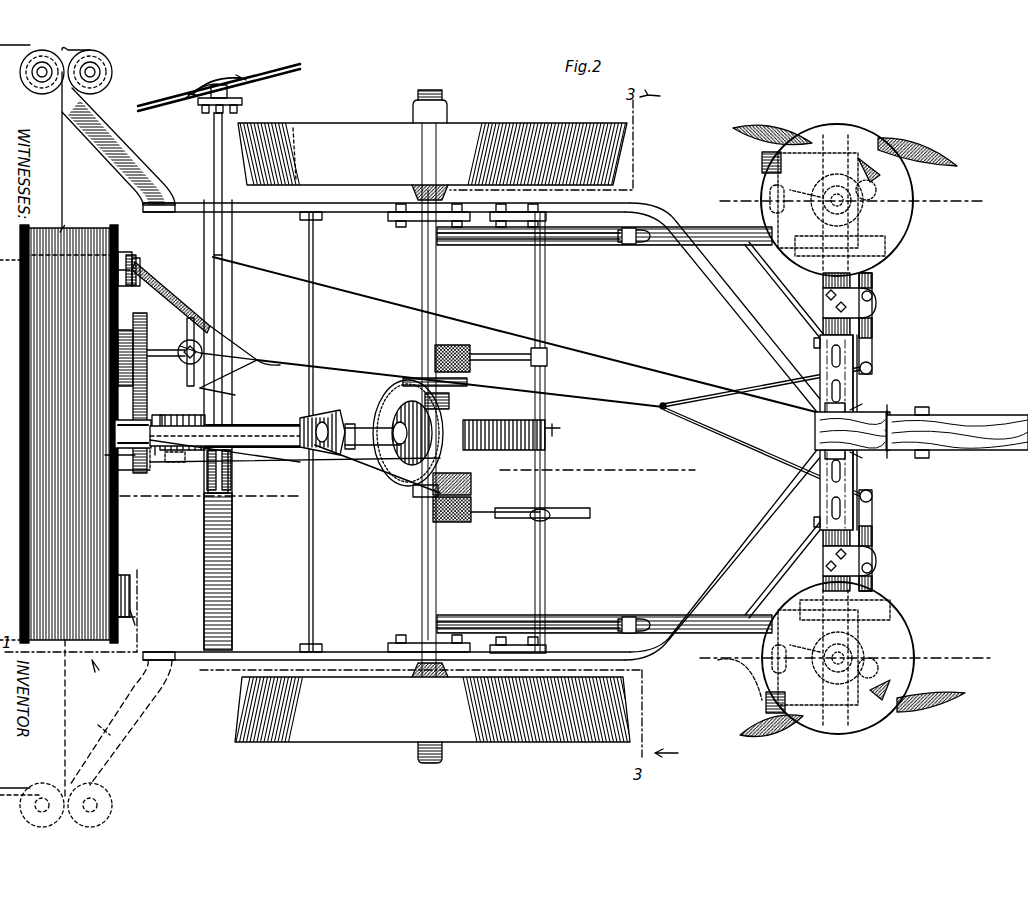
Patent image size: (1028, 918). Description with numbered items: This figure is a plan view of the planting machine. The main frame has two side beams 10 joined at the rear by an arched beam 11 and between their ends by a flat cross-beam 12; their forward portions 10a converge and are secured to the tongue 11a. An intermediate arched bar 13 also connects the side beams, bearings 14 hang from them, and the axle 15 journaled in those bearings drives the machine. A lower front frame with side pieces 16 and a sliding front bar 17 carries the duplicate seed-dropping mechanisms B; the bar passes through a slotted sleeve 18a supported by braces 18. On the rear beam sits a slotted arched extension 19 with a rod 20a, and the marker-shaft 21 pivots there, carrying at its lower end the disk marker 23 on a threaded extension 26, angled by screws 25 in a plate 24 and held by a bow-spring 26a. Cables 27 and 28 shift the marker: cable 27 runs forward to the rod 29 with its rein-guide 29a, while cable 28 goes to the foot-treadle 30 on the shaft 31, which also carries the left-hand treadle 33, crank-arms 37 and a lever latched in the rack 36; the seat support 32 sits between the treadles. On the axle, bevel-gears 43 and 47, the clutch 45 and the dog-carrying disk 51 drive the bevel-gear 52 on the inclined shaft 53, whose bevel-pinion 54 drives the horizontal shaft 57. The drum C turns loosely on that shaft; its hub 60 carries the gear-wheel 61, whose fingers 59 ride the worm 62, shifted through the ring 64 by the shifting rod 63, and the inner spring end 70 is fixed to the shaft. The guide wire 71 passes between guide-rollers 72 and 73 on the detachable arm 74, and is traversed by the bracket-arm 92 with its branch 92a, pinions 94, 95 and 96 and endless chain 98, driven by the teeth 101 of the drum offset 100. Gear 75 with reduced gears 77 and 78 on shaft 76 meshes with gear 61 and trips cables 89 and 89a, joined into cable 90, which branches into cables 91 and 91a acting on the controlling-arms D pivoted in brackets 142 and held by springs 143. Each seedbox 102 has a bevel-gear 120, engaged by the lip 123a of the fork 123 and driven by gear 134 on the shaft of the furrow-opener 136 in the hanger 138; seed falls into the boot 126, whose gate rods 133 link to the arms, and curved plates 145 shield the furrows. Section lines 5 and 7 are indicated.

The drum C is at (22, 448).
The section line 5 is at (159, 457).
The section line 7 is at (846, 429).
The side beams 10 is at (368, 214).
The forward end portions of the side beams 10a is at (745, 312).
The rear arched beam 11 is at (234, 572).
The tongue or pole 11a is at (985, 414).
The flat cross-beam 12 is at (546, 330).
The intermediate arched bar 13 is at (313, 330).
The bearings 14 is at (418, 221).
The axle 15 is at (438, 305).
The side pieces of lower front frame 16 is at (658, 246).
The front bar 17 is at (820, 345).
The braces 18 is at (232, 390).
The sleeve 18a is at (857, 390).
The arched extension 19 is at (206, 478).
The rod 20a is at (246, 427).
The marker-shaft 21 is at (230, 288).
The disk marker 23 is at (272, 74).
The plate 24 is at (243, 102).
The adjusting-screws 25 is at (210, 112).
The threaded reduced extension 26 is at (222, 80).
The bow-spring 26a is at (205, 86).
The rope, chain, or cable 27 is at (636, 366).
The rope, chain, or cable 28 is at (380, 475).
The rod 29 is at (885, 452).
The rein-guide 29a is at (892, 412).
The foot-treadle 30 is at (455, 522).
The shaft 31 is at (548, 476).
The seat support 32 is at (508, 420).
The left-hand treadle 33 is at (462, 344).
The rack 36 is at (227, 444).
The crank-arms 37 is at (582, 233).
The bevel-gear 43 is at (468, 382).
The clutch 45 is at (450, 400).
The bevel-gear 47 is at (472, 476).
The collar or disk 51 is at (418, 498).
The bevel-gear 52 is at (408, 433).
The shaft 53 is at (362, 426).
The bevel-pinion 54 is at (330, 410).
The horizontal shaft 57 is at (156, 420).
The fingers 59 is at (159, 471).
The hub 60 is at (133, 434).
The gear-wheel 61 is at (148, 470).
The worm 62 is at (177, 464).
The shifting rod 63 is at (300, 462).
The ring 64 is at (200, 410).
The inner end of spring 70 is at (108, 456).
The guide wire 71 is at (64, 188).
The guide-roller 72 is at (113, 72).
The guide-roller 73 is at (52, 88).
The arm 74 is at (140, 150).
The gear 75 is at (180, 348).
The shaft 76 is at (178, 372).
The reduced gear 77 is at (138, 318).
The reduced gear 78 is at (116, 334).
The cord, rope, chain, or cable 89 is at (258, 358).
The cord, rope, chain, or cable 89a is at (265, 358).
The wire, rope, chain, or cable 90 is at (598, 399).
The branch cable 91 is at (752, 388).
The branch cable 91a is at (770, 455).
The bracket-arm 92 is at (178, 314).
The branch member 92a is at (130, 254).
The pinion 94 is at (142, 268).
The bevel-pinion 95 is at (118, 284).
The pinion 96 is at (140, 258).
The endless chain 98 is at (78, 240).
The offset 100 is at (130, 588).
The teeth 101 is at (135, 622).
The seedbox 102 is at (880, 612).
The bevel-gear 120 is at (870, 222).
The actuating-fork 123 is at (820, 220).
The lip 123a is at (915, 203).
The boot or drill conductor 126 is at (762, 166).
The rods 133 is at (838, 245).
The bevel-gear 134 is at (865, 160).
The furrow-opener 136 is at (905, 148).
The hanger 138 is at (866, 189).
The bracket 142 is at (872, 292).
The spring 143 is at (873, 298).
The curved plates 145 is at (790, 132).
The seed-dropping mechanism B is at (905, 640).
The controlling-arm D is at (875, 320).